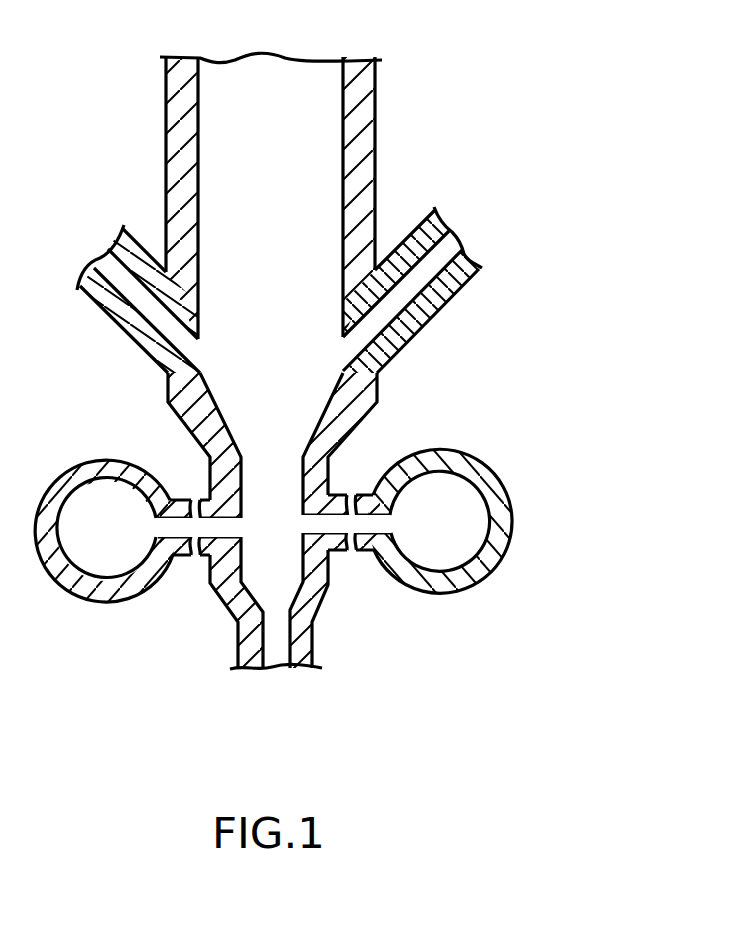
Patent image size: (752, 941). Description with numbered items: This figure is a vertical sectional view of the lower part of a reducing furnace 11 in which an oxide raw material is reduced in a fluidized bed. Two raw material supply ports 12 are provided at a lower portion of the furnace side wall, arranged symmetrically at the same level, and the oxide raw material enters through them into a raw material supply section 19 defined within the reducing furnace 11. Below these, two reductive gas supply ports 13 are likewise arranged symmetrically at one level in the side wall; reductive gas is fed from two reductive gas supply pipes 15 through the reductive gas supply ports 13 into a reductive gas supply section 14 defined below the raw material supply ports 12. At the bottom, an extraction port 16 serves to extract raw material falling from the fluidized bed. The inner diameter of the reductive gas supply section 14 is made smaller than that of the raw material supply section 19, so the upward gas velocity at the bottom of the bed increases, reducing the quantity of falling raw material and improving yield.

The reducing furnace 11 is at (378, 100).
The raw material supply ports 12 is at (200, 356).
The reductive gas supply ports 13 is at (212, 557).
The reductive gas supply section 14 is at (329, 558).
The reductive gas supply pipes 15 is at (495, 467).
The extraction port 16 is at (272, 655).
The raw material supply section 19 is at (271, 350).